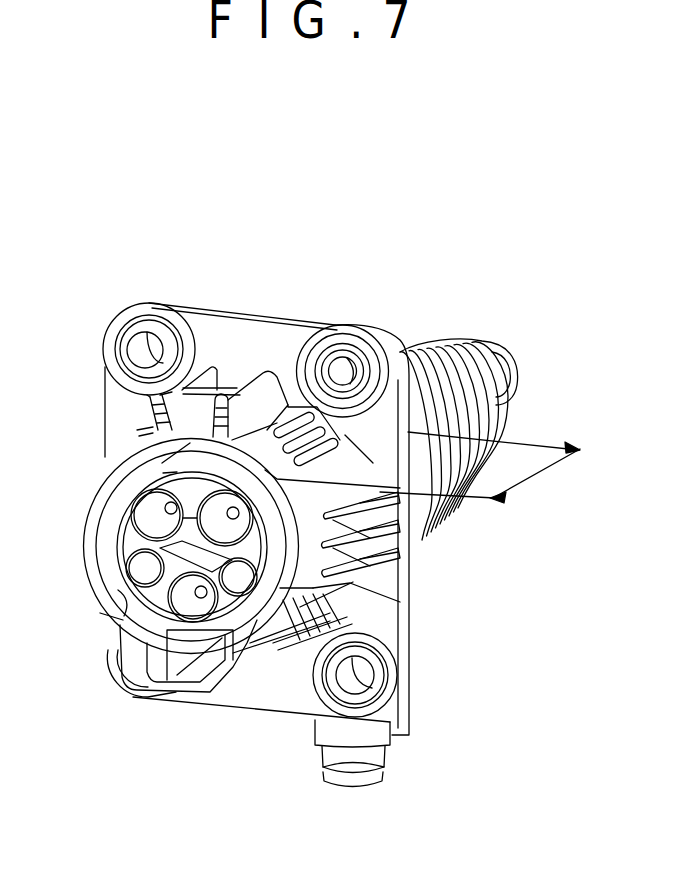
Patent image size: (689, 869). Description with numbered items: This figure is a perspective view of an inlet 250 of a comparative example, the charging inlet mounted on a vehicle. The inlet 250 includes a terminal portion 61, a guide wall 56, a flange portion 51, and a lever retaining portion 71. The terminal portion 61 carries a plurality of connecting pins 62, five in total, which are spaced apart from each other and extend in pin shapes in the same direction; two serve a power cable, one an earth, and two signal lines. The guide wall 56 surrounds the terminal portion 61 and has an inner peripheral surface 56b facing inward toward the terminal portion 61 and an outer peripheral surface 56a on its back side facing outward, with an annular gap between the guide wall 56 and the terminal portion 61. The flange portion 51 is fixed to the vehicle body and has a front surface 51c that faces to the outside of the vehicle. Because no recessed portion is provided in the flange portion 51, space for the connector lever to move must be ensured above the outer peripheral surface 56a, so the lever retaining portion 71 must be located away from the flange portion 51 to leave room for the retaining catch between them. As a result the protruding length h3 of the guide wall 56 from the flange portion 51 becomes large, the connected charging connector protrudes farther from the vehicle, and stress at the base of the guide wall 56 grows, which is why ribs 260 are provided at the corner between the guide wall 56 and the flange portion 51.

The inlet 250 is at (100, 300).
The flange portion 51 is at (246, 347).
The front surface 51c is at (345, 435).
The ribs 260 is at (288, 407).
The lever retaining portion 71 is at (200, 418).
The guide wall 56 is at (86, 542).
The outer peripheral surface 56a is at (313, 592).
The inner peripheral surface 56b is at (125, 610).
The connecting pins 62 is at (164, 509).
The terminal portion 61 is at (282, 620).
The protruding length h3 is at (532, 473).